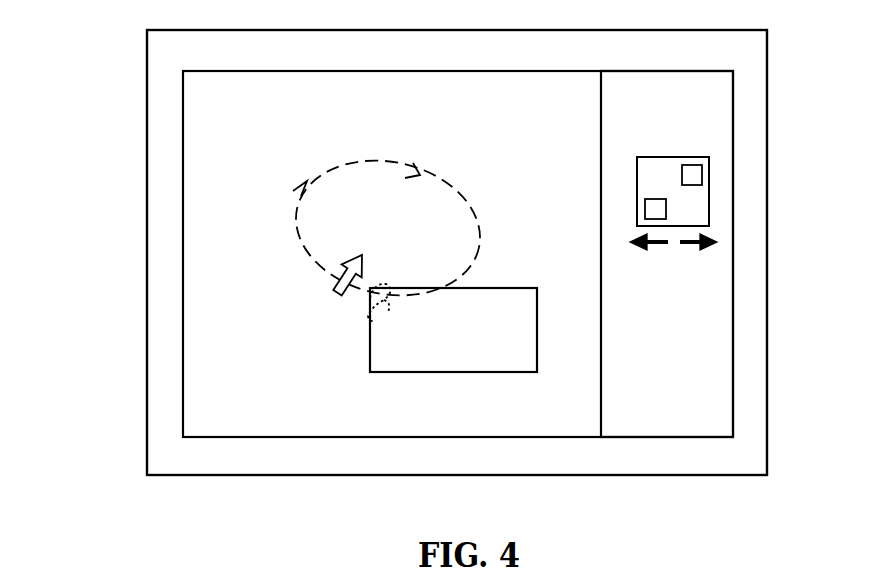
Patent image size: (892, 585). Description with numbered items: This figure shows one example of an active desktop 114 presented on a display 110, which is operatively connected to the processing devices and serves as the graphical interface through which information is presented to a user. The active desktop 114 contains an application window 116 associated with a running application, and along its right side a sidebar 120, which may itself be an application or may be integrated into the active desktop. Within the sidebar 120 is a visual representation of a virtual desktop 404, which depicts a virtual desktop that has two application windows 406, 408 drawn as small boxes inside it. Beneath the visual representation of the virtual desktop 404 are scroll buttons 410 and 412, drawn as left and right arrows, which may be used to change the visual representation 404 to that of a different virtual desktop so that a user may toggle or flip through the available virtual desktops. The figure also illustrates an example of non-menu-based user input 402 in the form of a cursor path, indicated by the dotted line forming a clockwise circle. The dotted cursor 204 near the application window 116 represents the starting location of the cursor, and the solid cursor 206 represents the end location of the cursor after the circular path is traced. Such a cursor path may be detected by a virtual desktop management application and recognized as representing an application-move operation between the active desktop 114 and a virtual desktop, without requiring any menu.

The display 110 is at (147, 162).
The active desktop 114 is at (207, 130).
The application window 116 is at (453, 375).
The sidebar 120 is at (657, 400).
The dotted cursor 204 is at (363, 315).
The solid cursor 206 is at (333, 287).
The non-menu-based user input 402 is at (462, 208).
The visual representation of a virtual desktop 404 is at (709, 190).
The application window 406 is at (655, 199).
The application window 408 is at (683, 166).
The scroll button 410 is at (667, 248).
The scroll button 412 is at (686, 248).